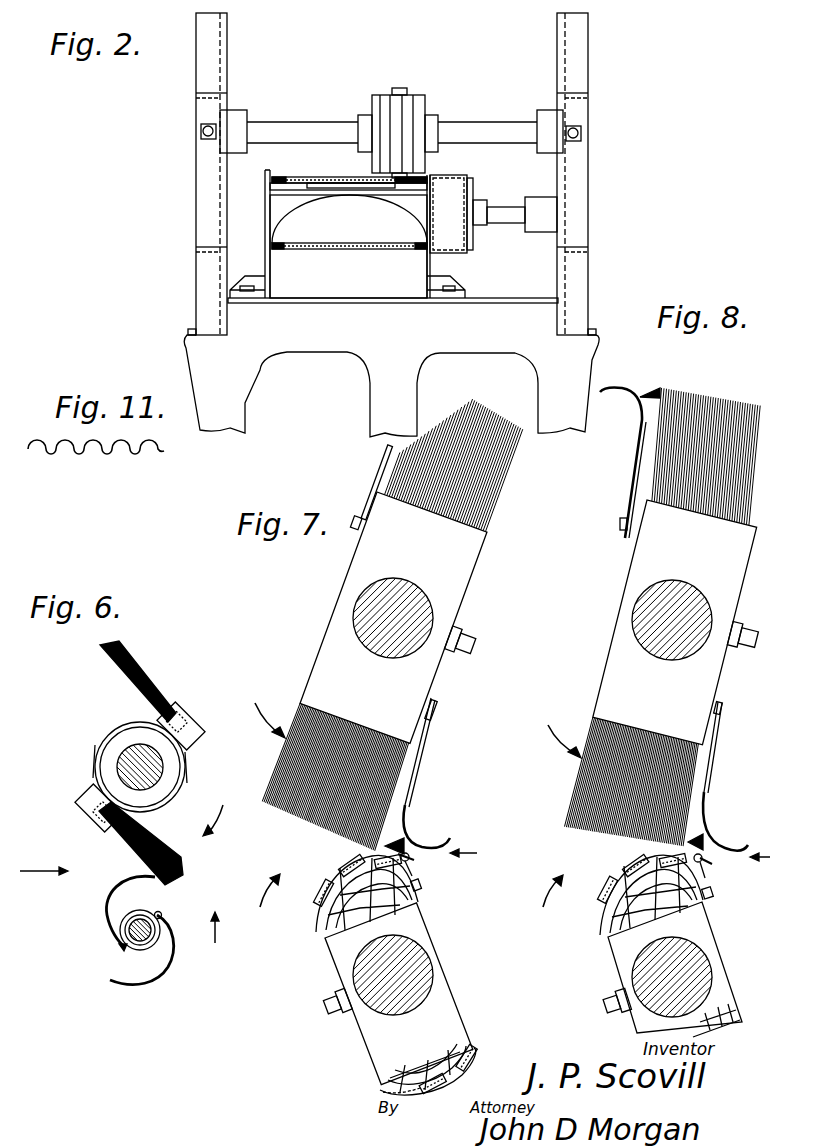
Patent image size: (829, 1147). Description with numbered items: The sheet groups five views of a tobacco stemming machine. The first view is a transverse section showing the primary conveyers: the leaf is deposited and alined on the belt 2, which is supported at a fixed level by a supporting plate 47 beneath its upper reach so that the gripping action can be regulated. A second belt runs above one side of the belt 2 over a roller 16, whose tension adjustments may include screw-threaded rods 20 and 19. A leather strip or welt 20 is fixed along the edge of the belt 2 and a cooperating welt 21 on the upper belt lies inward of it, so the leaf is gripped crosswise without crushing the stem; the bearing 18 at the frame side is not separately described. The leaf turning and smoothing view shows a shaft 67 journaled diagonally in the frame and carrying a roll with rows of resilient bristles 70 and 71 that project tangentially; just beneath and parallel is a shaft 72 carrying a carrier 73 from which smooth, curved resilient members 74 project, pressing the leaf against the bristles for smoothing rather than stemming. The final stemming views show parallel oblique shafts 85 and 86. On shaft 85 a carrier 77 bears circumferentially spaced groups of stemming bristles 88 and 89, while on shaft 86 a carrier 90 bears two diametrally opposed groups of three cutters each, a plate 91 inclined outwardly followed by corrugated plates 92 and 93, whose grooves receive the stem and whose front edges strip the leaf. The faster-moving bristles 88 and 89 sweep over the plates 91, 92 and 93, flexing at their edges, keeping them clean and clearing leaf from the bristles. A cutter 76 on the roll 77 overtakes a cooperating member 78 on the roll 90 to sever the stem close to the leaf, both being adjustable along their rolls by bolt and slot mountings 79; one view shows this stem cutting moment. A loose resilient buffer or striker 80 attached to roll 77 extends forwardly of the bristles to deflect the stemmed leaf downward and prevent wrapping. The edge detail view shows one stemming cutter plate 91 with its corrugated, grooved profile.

In FIG. 2, the belt 2 is at (341, 178).
In FIG. 2, the roller 16 is at (422, 106).
In FIG. 2, the bearing 18 is at (200, 134).
In FIG. 2, the screw-threaded rod 19 is at (583, 133).
In FIG. 2, the strip or welt 20 is at (430, 178).
In FIG. 2, the strip or welt 21 is at (397, 90).
In FIG. 2, the supporting plate 47 is at (298, 188).
In FIG. 6, the shaft 67 is at (148, 777).
In FIG. 6, the bristles 70 is at (125, 848).
In FIG. 6, the bristles 71 is at (123, 685).
In FIG. 6, the shaft 72 is at (161, 917).
In FIG. 6, the carrier 73 is at (121, 948).
In FIG. 6, the resilient member 74 is at (115, 888).
In FIG. 7, the cutter 76 is at (395, 843).
In FIG. 8, the cutter 76 is at (649, 396).
In FIG. 7, the carrier 77 is at (468, 562).
In FIG. 8, the carrier 77 is at (627, 556).
In FIG. 7, the coöperating member 78 is at (414, 859).
In FIG. 8, the coöperating member 78 is at (701, 860).
In FIG. 7, the bolt and slot mountings 79 is at (437, 712).
In FIG. 8, the bolt and slot mountings 79 is at (725, 708).
In FIG. 7, the buffer or striker 80 is at (371, 484).
In FIG. 8, the buffer or striker 80 is at (638, 443).
In FIG. 7, the shaft 85 is at (362, 600).
In FIG. 8, the shaft 85 is at (633, 609).
In FIG. 7, the shaft 86 is at (430, 967).
In FIG. 8, the shaft 86 is at (693, 953).
In FIG. 7, the bristles 88 is at (293, 762).
In FIG. 8, the bristles 88 is at (593, 771).
In FIG. 7, the bristles 89 is at (493, 470).
In FIG. 8, the bristles 89 is at (677, 469).
In FIG. 7, the carrier 90 is at (322, 935).
In FIG. 8, the carrier 90 is at (608, 928).
In FIG. 11, the plate 91 is at (110, 454).
In FIG. 7, the plate 91 is at (414, 870).
In FIG. 8, the plate 91 is at (703, 872).
In FIG. 7, the corrugated plate 92 is at (345, 869).
In FIG. 8, the corrugated plate 92 is at (637, 868).
In FIG. 7, the corrugated plate 93 is at (318, 892).
In FIG. 8, the corrugated plate 93 is at (602, 884).